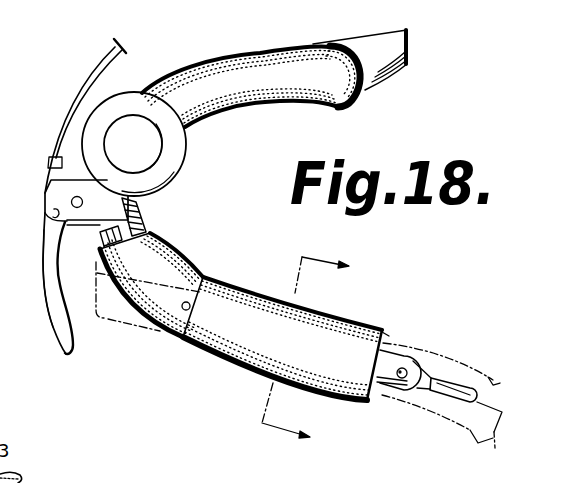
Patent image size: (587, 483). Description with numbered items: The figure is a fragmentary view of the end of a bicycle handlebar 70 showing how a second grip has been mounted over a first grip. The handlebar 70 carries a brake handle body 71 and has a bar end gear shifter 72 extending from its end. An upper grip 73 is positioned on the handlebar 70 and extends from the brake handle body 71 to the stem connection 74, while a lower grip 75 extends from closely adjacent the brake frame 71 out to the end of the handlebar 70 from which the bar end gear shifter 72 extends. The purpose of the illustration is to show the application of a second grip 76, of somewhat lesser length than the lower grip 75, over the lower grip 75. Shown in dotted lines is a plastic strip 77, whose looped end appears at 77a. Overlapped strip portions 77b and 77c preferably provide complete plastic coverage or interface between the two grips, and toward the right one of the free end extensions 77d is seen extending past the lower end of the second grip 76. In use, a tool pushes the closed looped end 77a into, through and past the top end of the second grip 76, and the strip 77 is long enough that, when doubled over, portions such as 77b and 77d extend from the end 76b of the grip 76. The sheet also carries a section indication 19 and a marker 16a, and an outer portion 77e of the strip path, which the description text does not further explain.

The handlebar 70 is at (125, 233).
The brake handle body 71 is at (96, 212).
The bar end gear shifter 72 is at (460, 399).
The upper grip 73 is at (248, 52).
The stem connection 74 is at (378, 42).
The lower grip 75 is at (176, 263).
The second grip 76 is at (232, 288).
The end of second grip 76b is at (385, 340).
The arm marker 16a is at (190, 306).
The plastic strip 77 is at (113, 327).
The looped end of strip 77a is at (95, 301).
The overlapped strip portion 77b is at (150, 325).
The overlapped strip portion 77c is at (444, 352).
The free end extension of strip 77d is at (495, 449).
The path line portion 77e is at (504, 380).
The section line for FIG. 19 is at (289, 343).